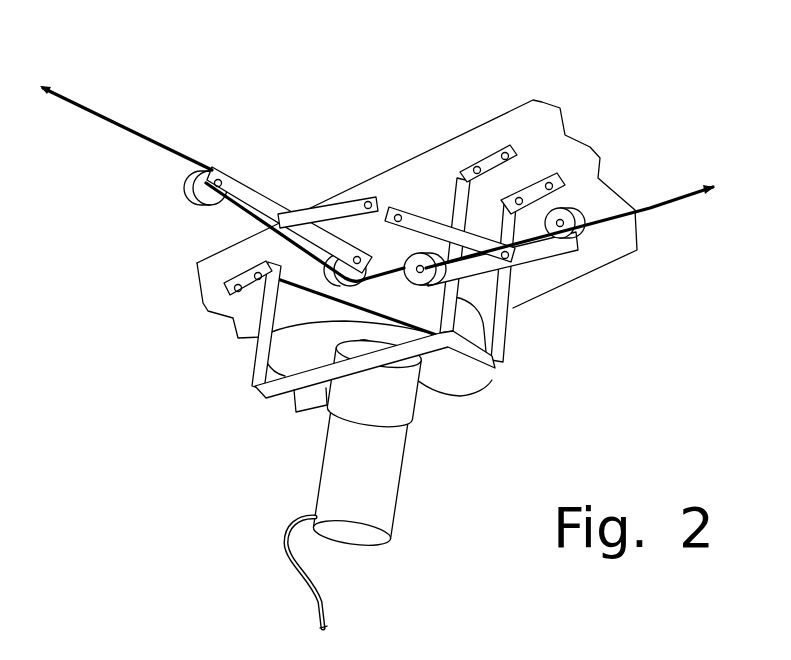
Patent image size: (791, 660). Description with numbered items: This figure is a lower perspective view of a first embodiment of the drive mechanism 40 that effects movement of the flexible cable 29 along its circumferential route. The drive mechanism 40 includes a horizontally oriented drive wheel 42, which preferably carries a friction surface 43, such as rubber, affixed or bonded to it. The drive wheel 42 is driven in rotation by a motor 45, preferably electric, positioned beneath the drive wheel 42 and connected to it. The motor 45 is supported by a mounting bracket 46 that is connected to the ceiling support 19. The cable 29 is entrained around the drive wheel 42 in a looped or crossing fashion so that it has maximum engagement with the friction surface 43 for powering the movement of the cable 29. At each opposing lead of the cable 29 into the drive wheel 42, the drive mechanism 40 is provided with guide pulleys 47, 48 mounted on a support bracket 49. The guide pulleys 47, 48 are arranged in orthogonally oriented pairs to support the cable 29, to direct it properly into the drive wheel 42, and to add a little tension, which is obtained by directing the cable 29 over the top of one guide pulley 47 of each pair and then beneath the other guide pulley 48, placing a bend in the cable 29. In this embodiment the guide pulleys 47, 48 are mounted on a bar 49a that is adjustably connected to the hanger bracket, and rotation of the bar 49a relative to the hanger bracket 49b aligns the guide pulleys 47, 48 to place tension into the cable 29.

The ceiling support 19 is at (587, 147).
The cable 29 is at (135, 130).
The drive mechanism 40 is at (178, 437).
The drive wheel 42 is at (463, 394).
The friction surface 43 is at (290, 323).
The motor 45 is at (326, 458).
The mounting bracket 46 is at (253, 372).
The guide pulley 47 is at (187, 200).
The guide pulley 48 is at (578, 214).
The support bracket 49 is at (176, 251).
The bar 49a is at (551, 245).
The hanger bracket 49b is at (312, 208).